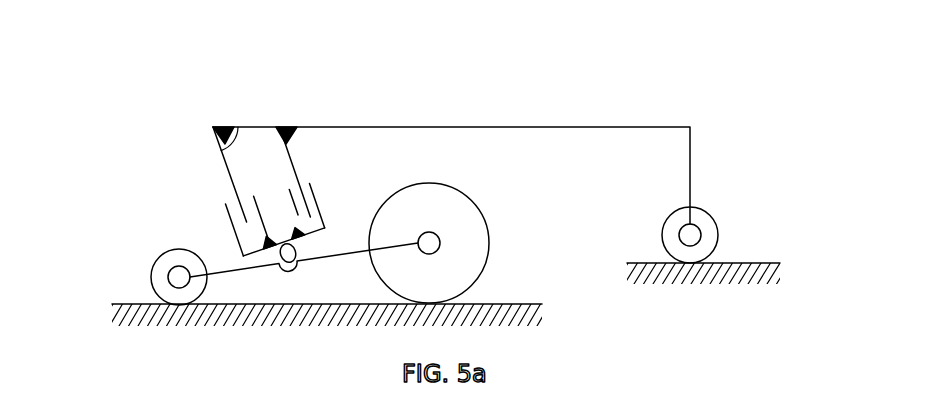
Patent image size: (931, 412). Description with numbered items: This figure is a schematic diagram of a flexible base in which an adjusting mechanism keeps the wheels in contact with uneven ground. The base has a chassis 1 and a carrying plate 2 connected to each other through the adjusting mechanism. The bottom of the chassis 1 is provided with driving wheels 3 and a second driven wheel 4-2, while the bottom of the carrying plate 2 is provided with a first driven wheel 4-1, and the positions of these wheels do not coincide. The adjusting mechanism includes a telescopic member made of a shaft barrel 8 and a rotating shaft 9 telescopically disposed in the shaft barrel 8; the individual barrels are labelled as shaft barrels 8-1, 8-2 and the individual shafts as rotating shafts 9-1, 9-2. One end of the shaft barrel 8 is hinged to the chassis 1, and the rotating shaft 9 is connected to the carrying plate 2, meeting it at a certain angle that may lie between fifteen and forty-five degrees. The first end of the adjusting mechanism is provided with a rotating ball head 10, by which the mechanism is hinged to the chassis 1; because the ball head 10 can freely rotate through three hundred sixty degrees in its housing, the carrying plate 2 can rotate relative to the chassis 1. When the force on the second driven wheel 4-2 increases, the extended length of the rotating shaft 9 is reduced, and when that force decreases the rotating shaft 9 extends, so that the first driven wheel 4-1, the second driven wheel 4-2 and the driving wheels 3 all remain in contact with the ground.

The chassis 1 is at (340, 250).
The carrying plate 2 is at (358, 127).
The driving wheels 3 is at (477, 207).
The first driven wheel 4-1 is at (712, 228).
The second driven wheel 4-2 is at (158, 258).
The shaft barrel 8 is at (245, 214).
The shaft barrel 8-1 is at (233, 228).
The shaft barrel 8-2 is at (320, 216).
The rotating shaft 9 is at (234, 174).
The rotating shaft 9-1 is at (228, 172).
The rotating shaft 9-2 is at (293, 168).
The rotating ball head 10 is at (297, 269).